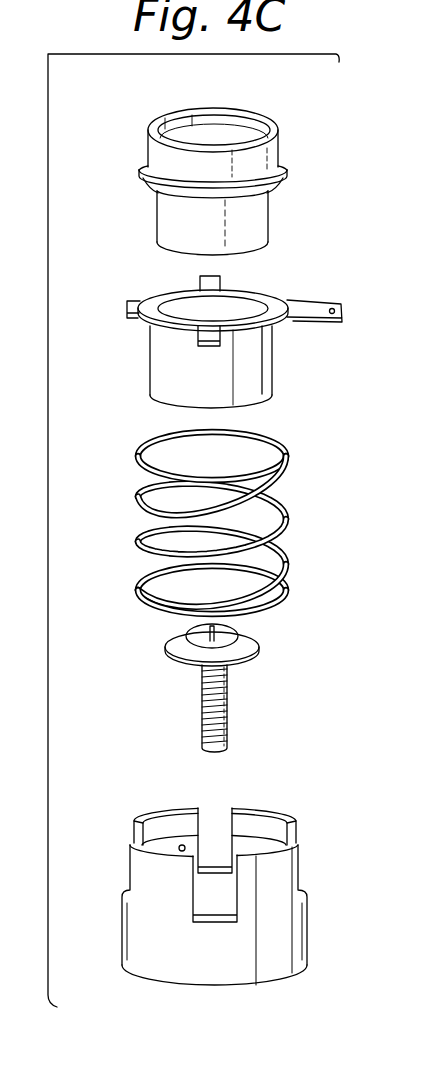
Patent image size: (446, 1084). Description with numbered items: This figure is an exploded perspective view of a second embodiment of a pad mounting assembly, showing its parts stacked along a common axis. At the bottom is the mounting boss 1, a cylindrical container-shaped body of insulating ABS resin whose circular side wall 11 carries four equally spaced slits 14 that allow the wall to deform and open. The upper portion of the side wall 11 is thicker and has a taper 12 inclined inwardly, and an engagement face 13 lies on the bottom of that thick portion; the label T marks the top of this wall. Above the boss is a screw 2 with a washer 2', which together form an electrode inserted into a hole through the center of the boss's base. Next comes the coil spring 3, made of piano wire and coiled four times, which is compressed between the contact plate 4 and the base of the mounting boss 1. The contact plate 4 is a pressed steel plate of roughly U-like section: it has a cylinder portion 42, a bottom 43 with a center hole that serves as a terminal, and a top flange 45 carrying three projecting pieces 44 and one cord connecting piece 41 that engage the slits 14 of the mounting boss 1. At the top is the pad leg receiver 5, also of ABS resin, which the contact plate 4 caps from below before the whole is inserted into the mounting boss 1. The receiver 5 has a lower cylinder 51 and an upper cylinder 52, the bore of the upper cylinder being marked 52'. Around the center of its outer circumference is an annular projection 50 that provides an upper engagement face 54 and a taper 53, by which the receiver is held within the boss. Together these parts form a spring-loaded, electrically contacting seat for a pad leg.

The mounting boss 1 is at (211, 890).
The circular side wall 11 is at (297, 935).
The taper 12 is at (284, 815).
The engagement face 13 is at (184, 845).
The slits 14 is at (214, 865).
The top surface T is at (157, 835).
The screw 2 is at (236, 686).
The washer 2' is at (236, 660).
The coil spring 3 is at (294, 507).
The contact plate 4 is at (231, 343).
The cord connecting piece 41 is at (324, 303).
The cylinder portion 42 is at (150, 358).
The bottom 43 is at (160, 408).
The projecting pieces 44 is at (222, 284).
The top flange 45 is at (263, 330).
The pad leg receiver 5 is at (232, 166).
The annular projection 50 is at (157, 192).
The lower cylinder 51 is at (263, 227).
The upper cylinder 52 is at (239, 136).
The inner bore 52' is at (187, 111).
The taper 53 is at (273, 187).
The upper engagement face 54 is at (143, 166).